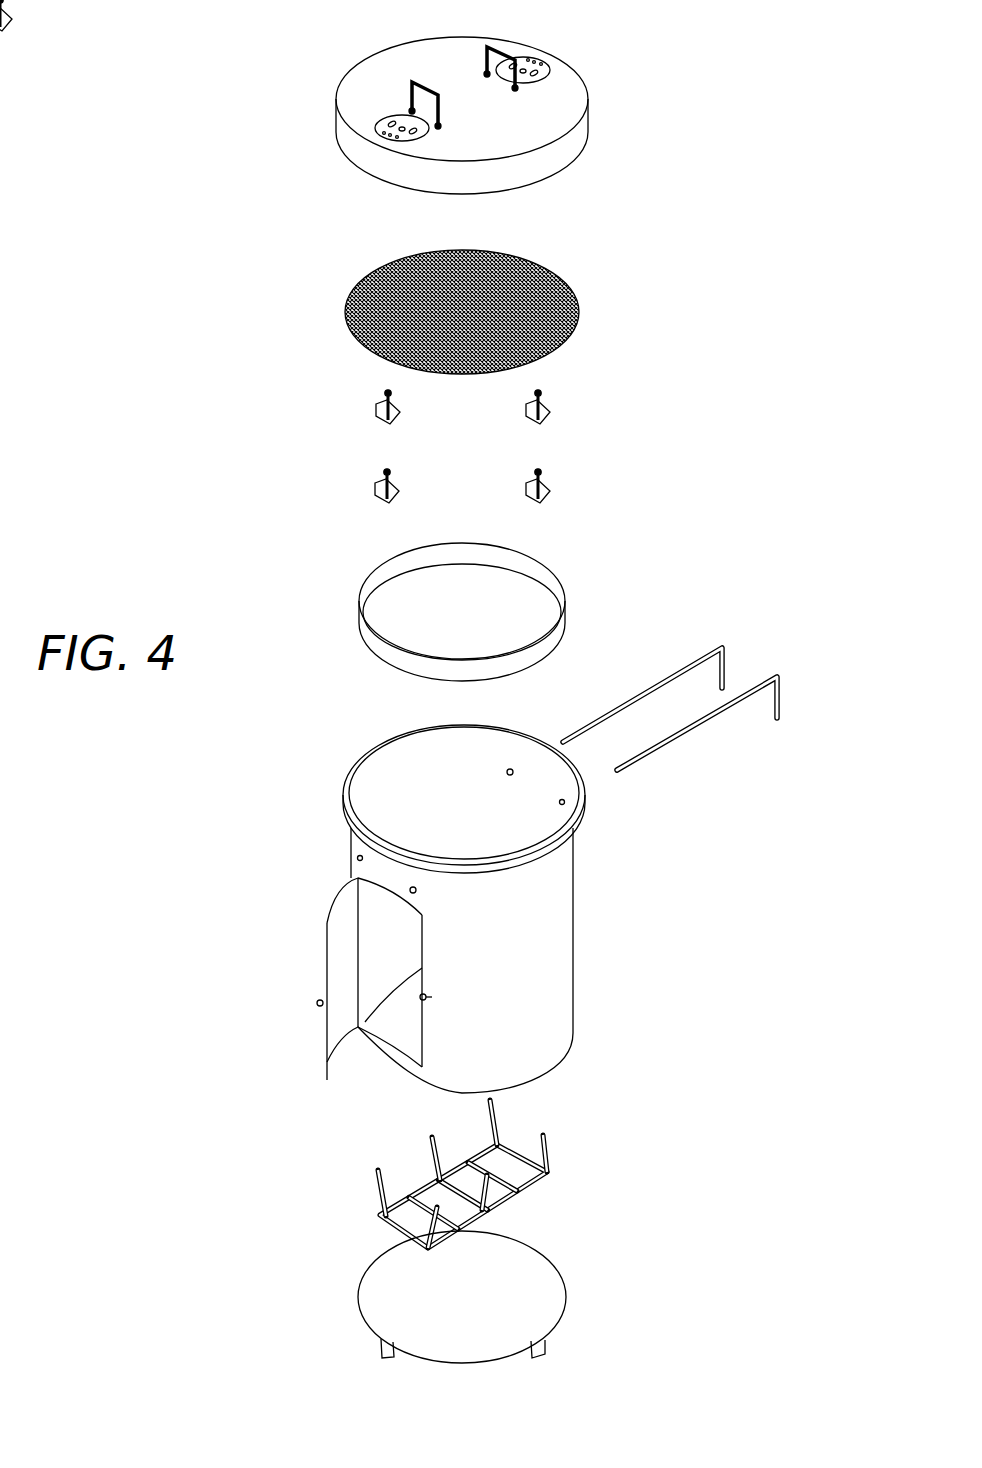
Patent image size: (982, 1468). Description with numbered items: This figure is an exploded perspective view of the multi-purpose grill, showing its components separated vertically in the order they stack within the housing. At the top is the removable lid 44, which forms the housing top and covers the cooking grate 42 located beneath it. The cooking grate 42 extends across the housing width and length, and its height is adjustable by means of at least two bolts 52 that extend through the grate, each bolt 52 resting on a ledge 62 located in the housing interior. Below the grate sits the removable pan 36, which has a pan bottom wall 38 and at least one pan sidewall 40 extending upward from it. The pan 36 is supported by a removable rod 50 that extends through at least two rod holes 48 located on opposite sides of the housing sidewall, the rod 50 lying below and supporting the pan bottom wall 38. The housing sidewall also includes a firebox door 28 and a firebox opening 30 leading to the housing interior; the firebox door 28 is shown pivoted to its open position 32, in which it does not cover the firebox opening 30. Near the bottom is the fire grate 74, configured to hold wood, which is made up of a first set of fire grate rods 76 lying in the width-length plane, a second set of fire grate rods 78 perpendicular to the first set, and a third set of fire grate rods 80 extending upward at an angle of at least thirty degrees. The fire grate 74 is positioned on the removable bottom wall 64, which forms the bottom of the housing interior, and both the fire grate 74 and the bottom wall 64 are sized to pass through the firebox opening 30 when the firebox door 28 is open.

The removable lid 44 is at (601, 124).
The cooking grate 42 is at (586, 284).
The ledge 62 is at (376, 410).
The bolt 52 is at (314, 266).
The pan 36 is at (458, 615).
The pan bottom wall 38 is at (427, 602).
The pan sidewall 40 is at (395, 656).
The removable rod 50 is at (768, 673).
The rod hole 48 is at (559, 802).
The open position 32 is at (404, 908).
The firebox door 28 is at (344, 981).
The firebox opening 30 is at (389, 1028).
The fire grate 74 is at (469, 1161).
The first set of fire grate rods 76 is at (518, 1145).
The second set of fire grate rods 78 is at (525, 1190).
The third set of fire grate rods 80 is at (378, 1170).
The bottom wall 64 is at (580, 1280).